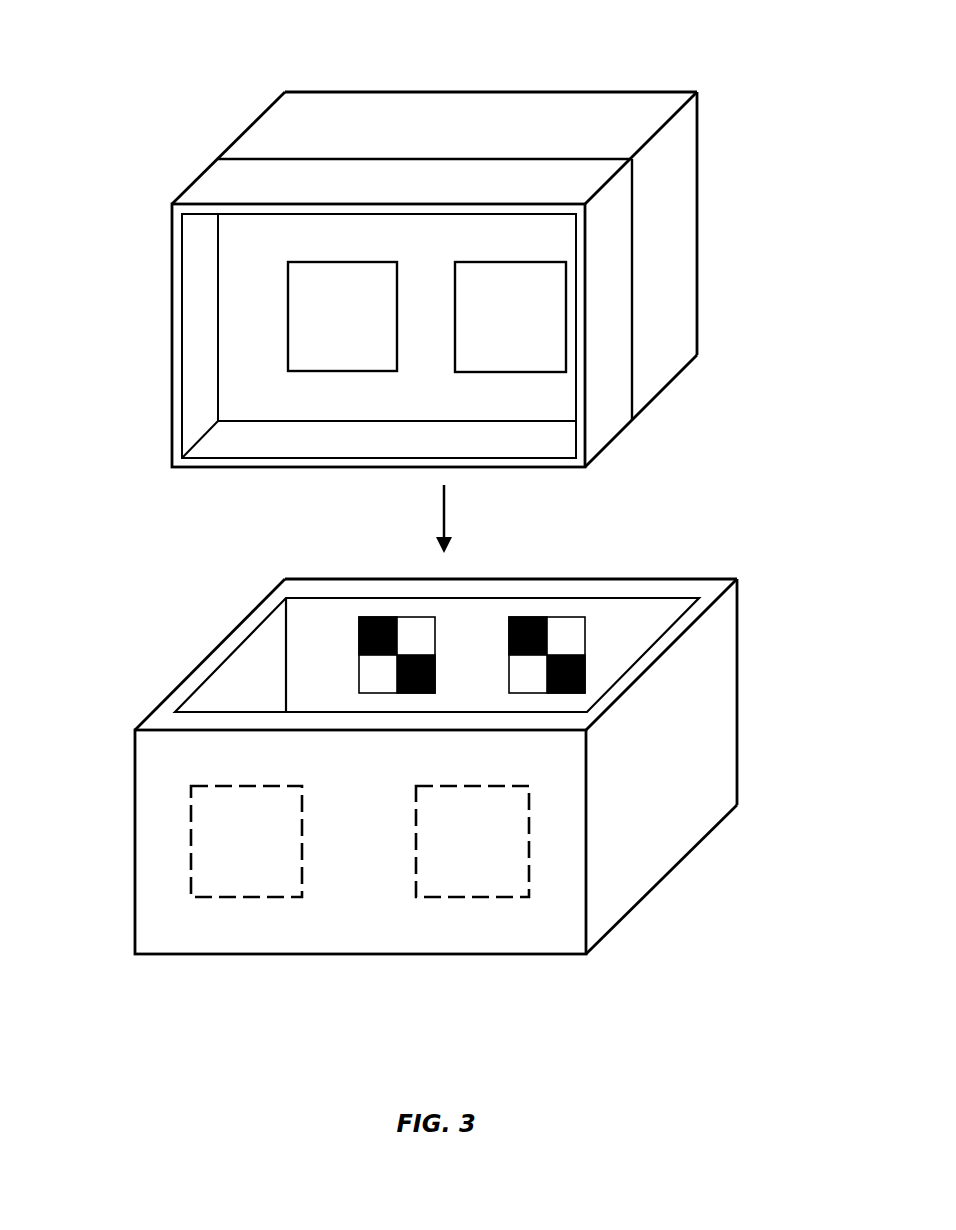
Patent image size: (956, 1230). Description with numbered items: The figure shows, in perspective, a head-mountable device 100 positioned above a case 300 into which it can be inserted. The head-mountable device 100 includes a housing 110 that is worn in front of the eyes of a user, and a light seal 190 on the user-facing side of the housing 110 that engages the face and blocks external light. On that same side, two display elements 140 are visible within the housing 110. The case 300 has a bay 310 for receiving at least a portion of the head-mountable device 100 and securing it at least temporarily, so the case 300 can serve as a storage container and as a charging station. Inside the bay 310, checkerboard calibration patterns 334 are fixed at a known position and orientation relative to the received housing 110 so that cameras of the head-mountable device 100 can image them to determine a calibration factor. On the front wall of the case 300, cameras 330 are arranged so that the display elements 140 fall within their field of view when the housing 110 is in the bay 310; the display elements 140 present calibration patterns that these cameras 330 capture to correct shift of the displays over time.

The head-mountable device 100 is at (418, 91).
The housing 110 is at (243, 127).
The light seal 190 is at (184, 188).
The display elements 140 is at (340, 354).
The case 300 is at (253, 608).
The bay 310 is at (313, 617).
The calibration pattern 334 is at (387, 617).
The cameras 330 is at (247, 897).